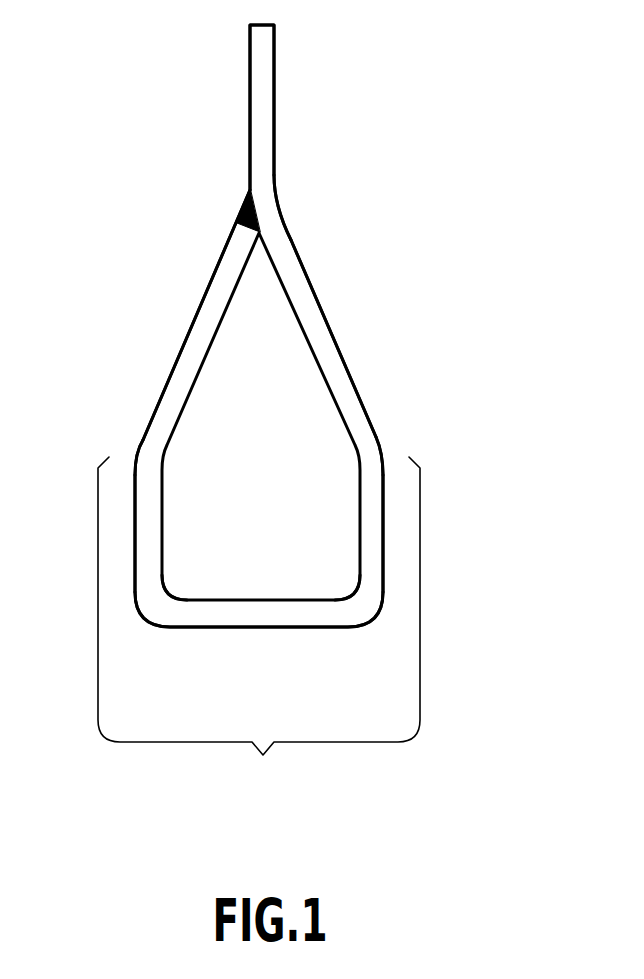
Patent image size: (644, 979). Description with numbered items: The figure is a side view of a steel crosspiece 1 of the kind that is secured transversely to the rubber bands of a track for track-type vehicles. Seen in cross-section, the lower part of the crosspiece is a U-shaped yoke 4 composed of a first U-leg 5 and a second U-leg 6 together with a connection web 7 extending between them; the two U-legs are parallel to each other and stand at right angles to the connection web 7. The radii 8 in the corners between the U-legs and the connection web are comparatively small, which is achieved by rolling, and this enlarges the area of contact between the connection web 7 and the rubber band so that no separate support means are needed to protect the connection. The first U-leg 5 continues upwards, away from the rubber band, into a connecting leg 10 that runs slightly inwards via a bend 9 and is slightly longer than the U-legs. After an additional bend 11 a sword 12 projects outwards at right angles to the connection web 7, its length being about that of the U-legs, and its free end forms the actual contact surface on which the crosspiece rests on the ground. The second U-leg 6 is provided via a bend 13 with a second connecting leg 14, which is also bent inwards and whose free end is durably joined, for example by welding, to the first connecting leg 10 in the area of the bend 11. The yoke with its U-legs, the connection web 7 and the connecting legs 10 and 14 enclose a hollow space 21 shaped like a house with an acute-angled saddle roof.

The steel crosspiece 1 is at (440, 130).
The U-shaped yoke 4 is at (259, 627).
The first U-leg 5 is at (368, 528).
The second U-leg 6 is at (150, 512).
The connection web 7 is at (258, 612).
The radii 8 is at (322, 568).
The bend 9 is at (372, 440).
The connecting leg 10 is at (332, 360).
The additional bend 11 is at (268, 212).
The sword 12 is at (258, 113).
The bend 13 is at (148, 453).
The second connecting leg 14 is at (197, 343).
The hollow space 21 is at (278, 434).